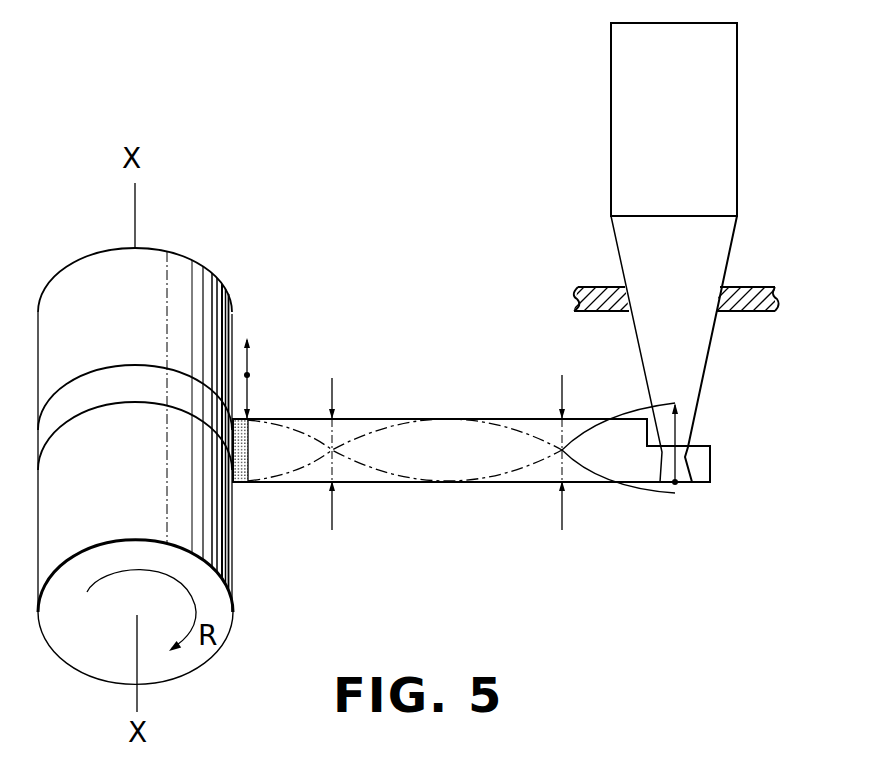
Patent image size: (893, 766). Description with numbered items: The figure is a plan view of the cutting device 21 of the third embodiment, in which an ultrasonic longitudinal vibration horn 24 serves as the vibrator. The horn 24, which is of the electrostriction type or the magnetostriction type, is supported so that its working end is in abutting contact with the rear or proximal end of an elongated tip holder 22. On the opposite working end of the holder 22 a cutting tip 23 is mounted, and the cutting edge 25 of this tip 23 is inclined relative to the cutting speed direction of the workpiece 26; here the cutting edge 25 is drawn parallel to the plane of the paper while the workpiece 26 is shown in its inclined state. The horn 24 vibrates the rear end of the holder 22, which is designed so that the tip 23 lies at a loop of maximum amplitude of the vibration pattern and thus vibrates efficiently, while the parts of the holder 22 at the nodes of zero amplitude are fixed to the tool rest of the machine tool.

The cutting device 21 is at (561, 205).
The tip holder 22 is at (505, 418).
The cutting tip 23 is at (242, 488).
The ultrasonic longitudinal vibration horn 24 is at (733, 247).
The cutting edge 25 is at (233, 473).
The workpiece 26 is at (213, 278).